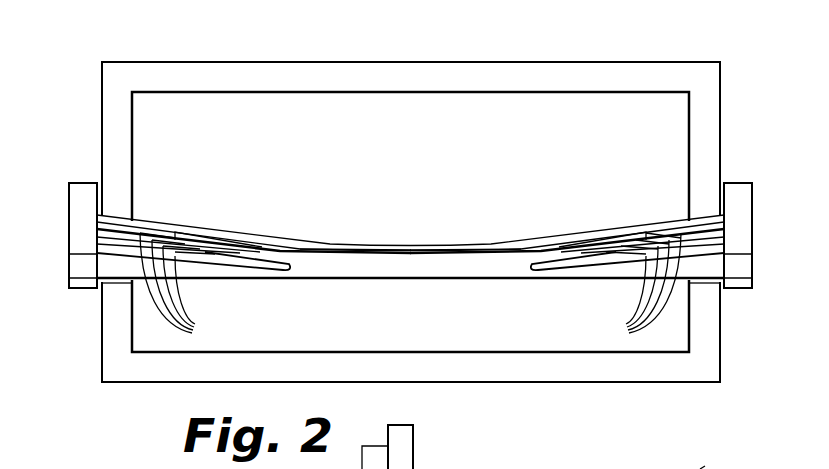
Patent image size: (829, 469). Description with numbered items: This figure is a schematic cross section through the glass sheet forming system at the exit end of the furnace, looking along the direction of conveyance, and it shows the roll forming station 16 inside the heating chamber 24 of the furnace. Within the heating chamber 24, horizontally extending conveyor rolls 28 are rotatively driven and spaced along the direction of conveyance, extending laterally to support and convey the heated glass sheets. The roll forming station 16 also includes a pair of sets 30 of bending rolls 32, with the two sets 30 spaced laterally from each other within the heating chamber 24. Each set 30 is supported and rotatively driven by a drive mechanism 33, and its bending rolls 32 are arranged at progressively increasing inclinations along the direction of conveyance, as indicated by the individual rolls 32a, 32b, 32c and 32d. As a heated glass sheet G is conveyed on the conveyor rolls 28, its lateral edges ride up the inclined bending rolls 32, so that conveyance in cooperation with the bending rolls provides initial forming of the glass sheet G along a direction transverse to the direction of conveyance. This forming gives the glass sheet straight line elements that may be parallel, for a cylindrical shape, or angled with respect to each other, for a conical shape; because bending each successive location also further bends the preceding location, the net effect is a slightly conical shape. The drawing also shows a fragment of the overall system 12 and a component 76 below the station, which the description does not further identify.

The roll forming station 16 is at (517, 53).
The heating chamber 24 is at (242, 93).
The drive mechanism 33 is at (411, 215).
The set of bending rolls 30 is at (410, 191).
The conveyor rolls 28 is at (405, 281).
The glass sheet G is at (378, 247).
The bending rolls 32 is at (410, 287).
The bending roll 32a is at (410, 224).
The bending roll 32b is at (410, 211).
The bending roll 32c is at (410, 198).
The bending roll 32d is at (410, 185).
The connector 76 is at (413, 460).
The device 12 is at (565, 462).